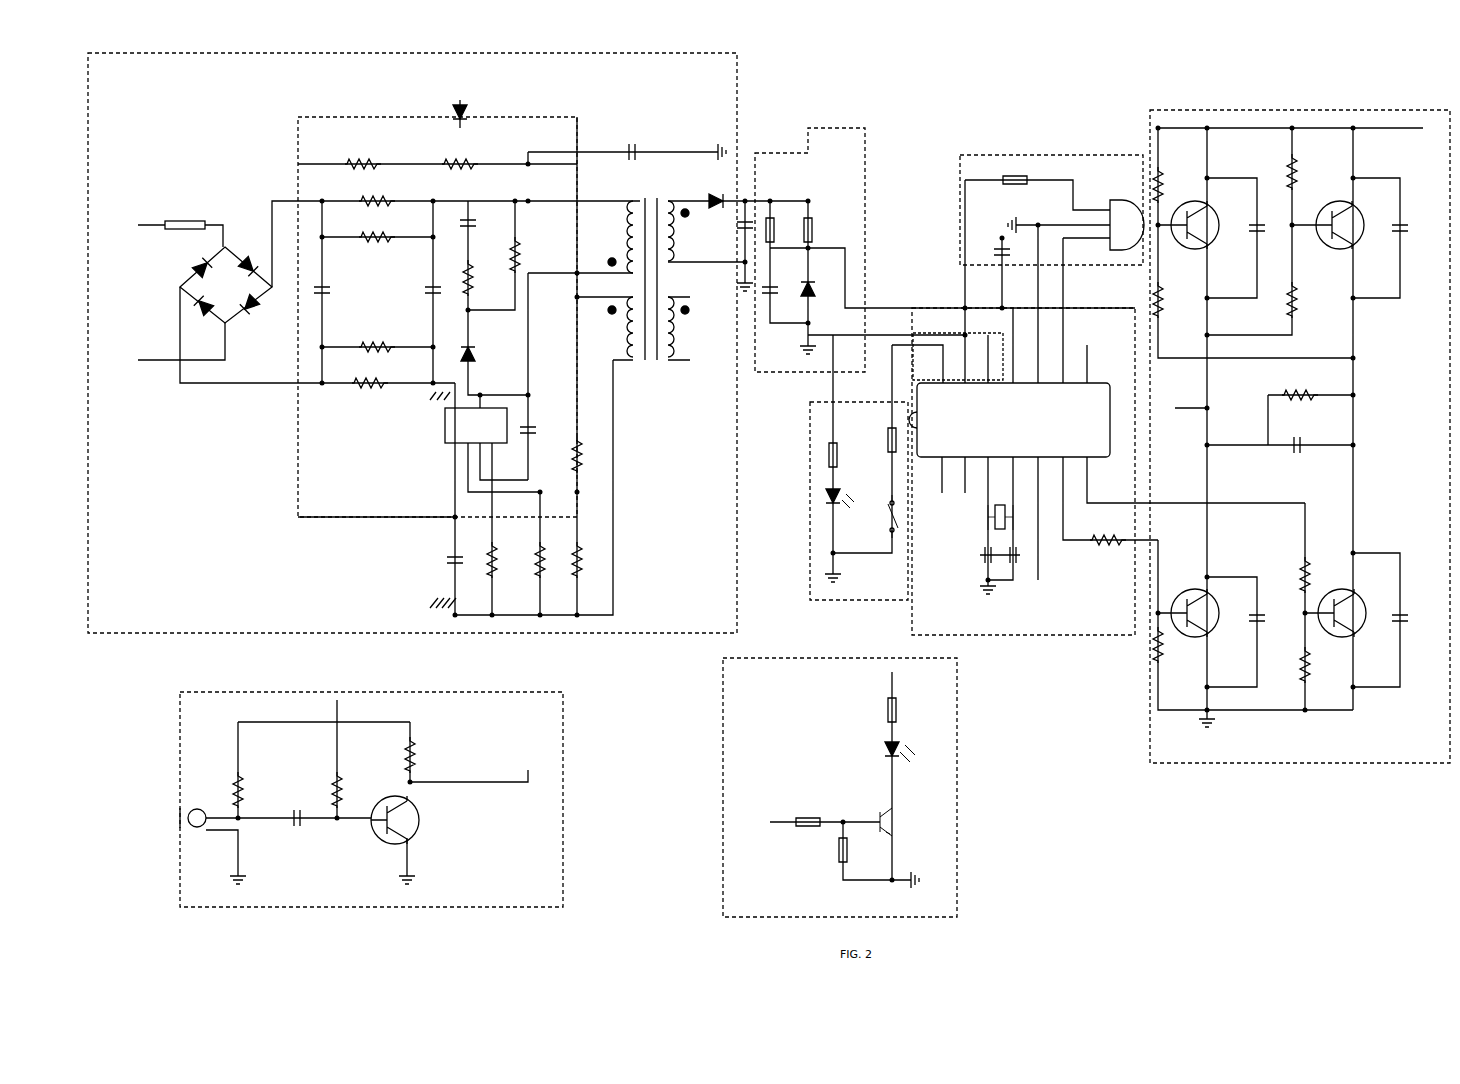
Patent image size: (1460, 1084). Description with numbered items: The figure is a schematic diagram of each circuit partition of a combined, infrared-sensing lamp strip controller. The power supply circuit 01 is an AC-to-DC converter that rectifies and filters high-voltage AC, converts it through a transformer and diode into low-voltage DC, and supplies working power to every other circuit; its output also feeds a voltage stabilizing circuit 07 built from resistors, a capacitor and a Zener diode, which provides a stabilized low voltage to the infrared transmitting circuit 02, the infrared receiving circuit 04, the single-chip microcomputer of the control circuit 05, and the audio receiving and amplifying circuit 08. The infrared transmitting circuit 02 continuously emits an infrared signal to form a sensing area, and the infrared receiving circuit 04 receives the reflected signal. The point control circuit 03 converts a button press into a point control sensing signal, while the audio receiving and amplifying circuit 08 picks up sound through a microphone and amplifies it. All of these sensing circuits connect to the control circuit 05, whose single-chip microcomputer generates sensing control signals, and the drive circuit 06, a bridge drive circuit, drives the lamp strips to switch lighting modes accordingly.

The power supply circuit 01 is at (595, 633).
The infrared transmitting circuit 02 is at (723, 785).
The point control circuit 03 is at (818, 498).
The infrared receiving circuit 04 is at (1045, 155).
The control circuit 05 is at (1035, 635).
The drive circuit 06 is at (1305, 763).
The voltage stabilizing circuit 07 is at (830, 128).
The audio receiving and amplifying circuit 08 is at (180, 745).